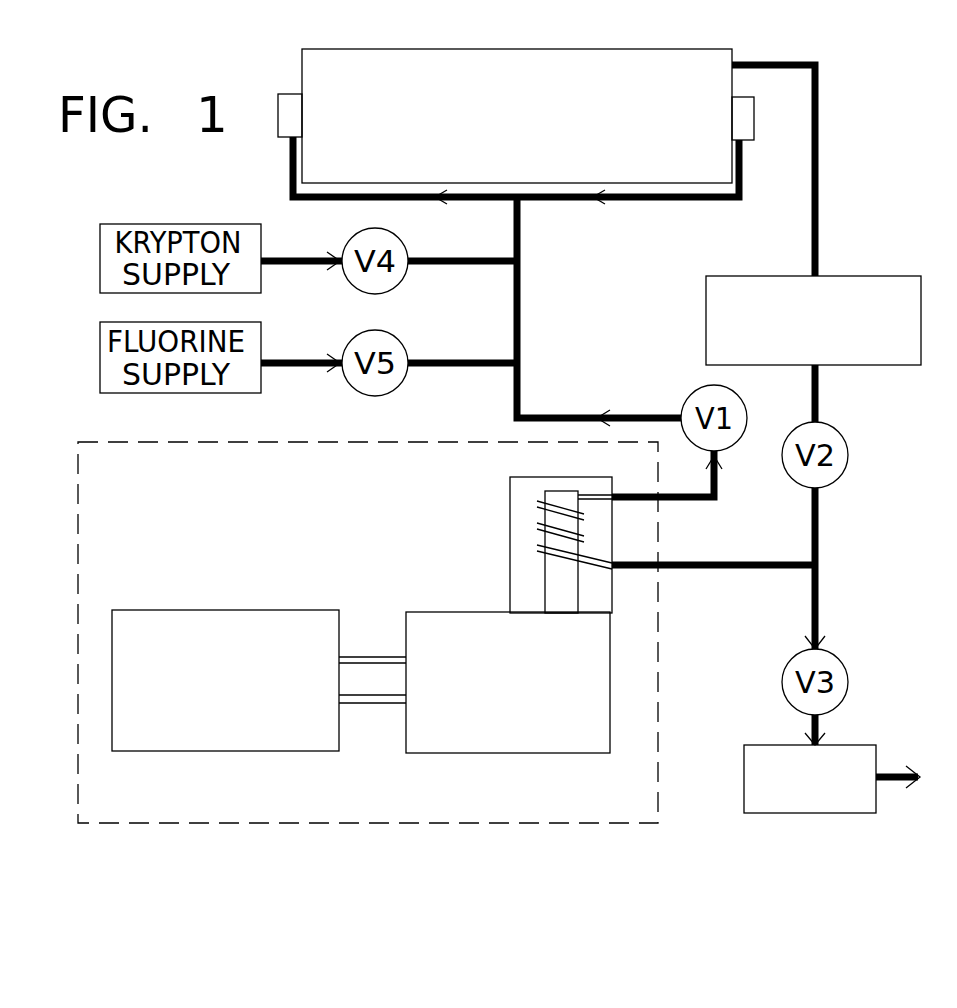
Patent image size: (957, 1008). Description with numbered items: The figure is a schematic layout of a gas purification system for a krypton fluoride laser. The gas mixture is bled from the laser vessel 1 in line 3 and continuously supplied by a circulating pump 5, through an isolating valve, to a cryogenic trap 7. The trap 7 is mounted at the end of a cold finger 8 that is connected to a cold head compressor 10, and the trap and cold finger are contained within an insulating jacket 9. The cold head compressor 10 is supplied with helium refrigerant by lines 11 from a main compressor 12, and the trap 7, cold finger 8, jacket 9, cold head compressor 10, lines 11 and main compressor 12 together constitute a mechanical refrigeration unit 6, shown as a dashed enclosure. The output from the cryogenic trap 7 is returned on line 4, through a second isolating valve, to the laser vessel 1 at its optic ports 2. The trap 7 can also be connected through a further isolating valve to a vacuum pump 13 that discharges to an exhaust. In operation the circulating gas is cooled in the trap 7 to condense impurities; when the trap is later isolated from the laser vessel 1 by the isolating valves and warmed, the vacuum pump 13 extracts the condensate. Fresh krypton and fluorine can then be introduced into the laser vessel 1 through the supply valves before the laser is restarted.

The laser vessel 1 is at (408, 68).
The optic ports 2 is at (290, 104).
The line 3 is at (820, 158).
The line 4 is at (622, 418).
The circulating pump 5 is at (851, 352).
The mechanical refrigeration unit 6 is at (640, 702).
The cryogenic trap 7 is at (541, 529).
The cold finger 8 is at (552, 587).
The insulating jacket 9 is at (517, 497).
The cold head compressor 10 is at (430, 620).
The lines 11 is at (357, 665).
The main compressor 12 is at (187, 620).
The vacuum pump 13 is at (846, 745).